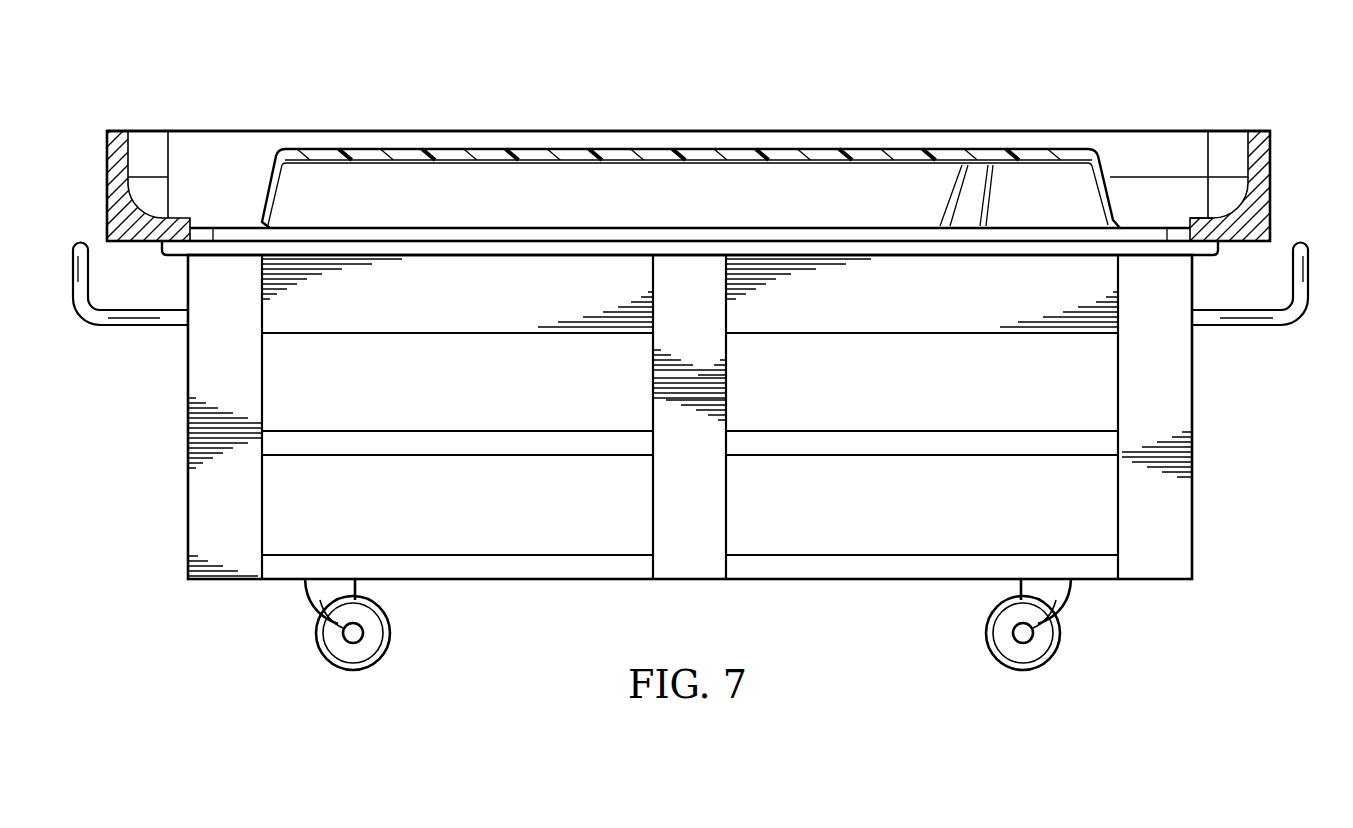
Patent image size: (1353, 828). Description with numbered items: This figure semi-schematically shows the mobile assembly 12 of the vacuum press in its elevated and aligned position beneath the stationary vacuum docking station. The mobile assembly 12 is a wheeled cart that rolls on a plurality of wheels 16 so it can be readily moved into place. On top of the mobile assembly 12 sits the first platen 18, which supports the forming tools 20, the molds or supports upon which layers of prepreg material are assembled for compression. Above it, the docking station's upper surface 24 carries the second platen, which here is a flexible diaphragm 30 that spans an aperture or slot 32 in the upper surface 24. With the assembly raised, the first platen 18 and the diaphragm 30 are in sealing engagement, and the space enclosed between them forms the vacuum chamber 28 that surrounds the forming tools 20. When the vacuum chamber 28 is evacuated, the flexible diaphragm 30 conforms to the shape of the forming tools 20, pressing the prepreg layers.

The mobile assembly 12 is at (168, 438).
The wheels 16 is at (320, 638).
The first platen 18 is at (398, 227).
The forming tools 20 is at (865, 180).
The upper surface 24 is at (1272, 178).
The vacuum chamber 28 is at (708, 110).
The flexible diaphragm 30 is at (487, 157).
The aperture or slot 32 is at (1177, 218).